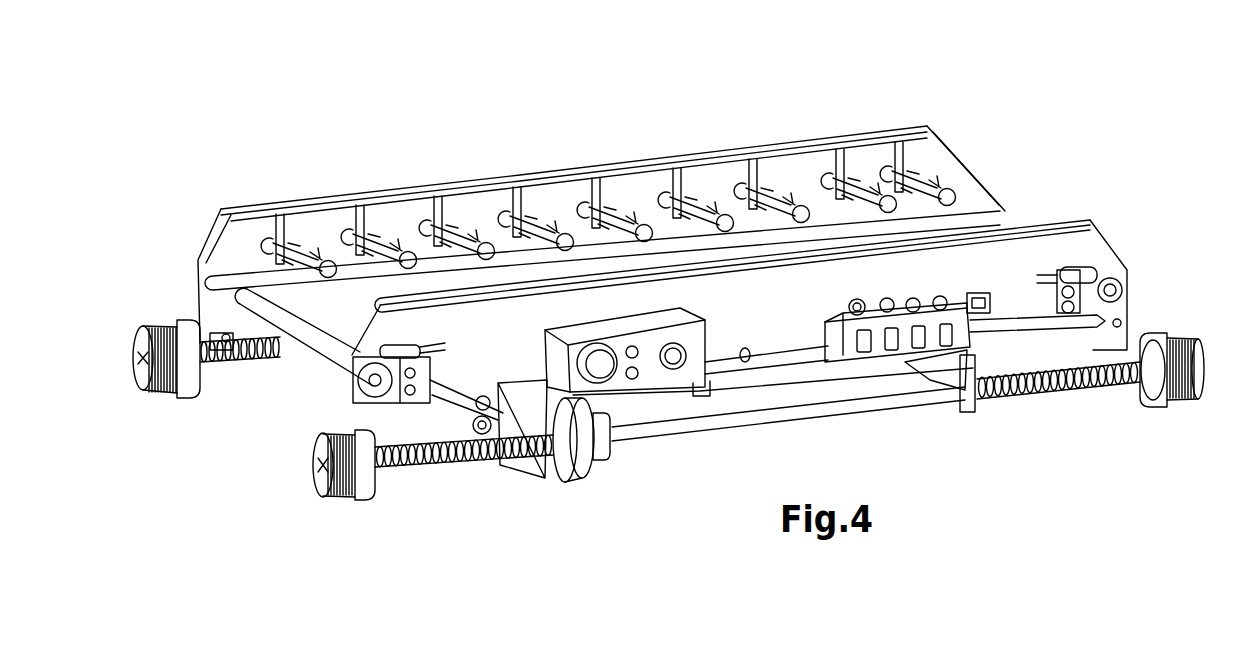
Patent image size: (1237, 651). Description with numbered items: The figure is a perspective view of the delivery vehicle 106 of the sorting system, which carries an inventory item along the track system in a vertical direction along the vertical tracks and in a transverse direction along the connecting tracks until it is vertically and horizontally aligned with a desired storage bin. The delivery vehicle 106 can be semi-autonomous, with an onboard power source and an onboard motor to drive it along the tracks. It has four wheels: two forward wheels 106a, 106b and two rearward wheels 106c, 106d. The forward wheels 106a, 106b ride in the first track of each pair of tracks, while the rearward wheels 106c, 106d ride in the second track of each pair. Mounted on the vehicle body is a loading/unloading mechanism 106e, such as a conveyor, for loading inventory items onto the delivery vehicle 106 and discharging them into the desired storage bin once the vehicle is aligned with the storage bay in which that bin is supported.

The delivery vehicle 106 is at (434, 126).
The forward wheel 106a is at (1190, 403).
The forward wheel 106b is at (363, 490).
The rearward wheel 106c is at (1020, 217).
The rearward wheel 106d is at (182, 385).
The loading/unloading mechanism 106e is at (356, 308).